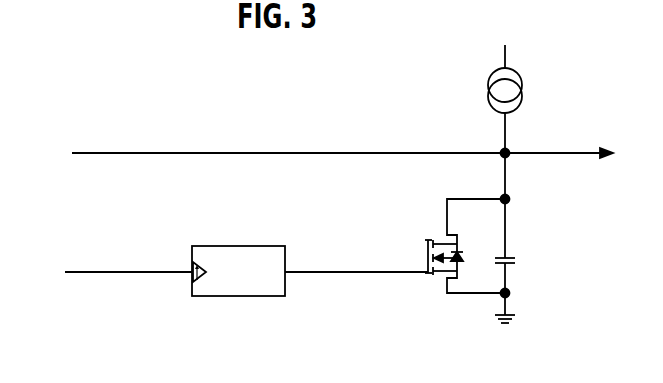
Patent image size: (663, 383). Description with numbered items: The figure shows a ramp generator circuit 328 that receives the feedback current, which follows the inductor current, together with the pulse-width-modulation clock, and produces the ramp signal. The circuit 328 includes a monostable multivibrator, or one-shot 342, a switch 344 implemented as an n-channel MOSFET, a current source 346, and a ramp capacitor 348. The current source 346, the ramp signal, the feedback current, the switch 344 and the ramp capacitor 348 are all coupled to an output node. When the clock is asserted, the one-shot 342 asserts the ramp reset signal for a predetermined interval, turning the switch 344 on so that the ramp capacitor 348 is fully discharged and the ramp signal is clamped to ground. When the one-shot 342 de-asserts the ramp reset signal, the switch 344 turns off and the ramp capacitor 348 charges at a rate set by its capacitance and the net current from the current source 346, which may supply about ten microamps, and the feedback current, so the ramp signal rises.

The ramp generator circuit 328 is at (77, 85).
The monostable multivibrator (one-shot) 342 is at (232, 297).
The switch 344 is at (427, 249).
The current source 346 is at (488, 88).
The ramp capacitor 348 is at (513, 267).